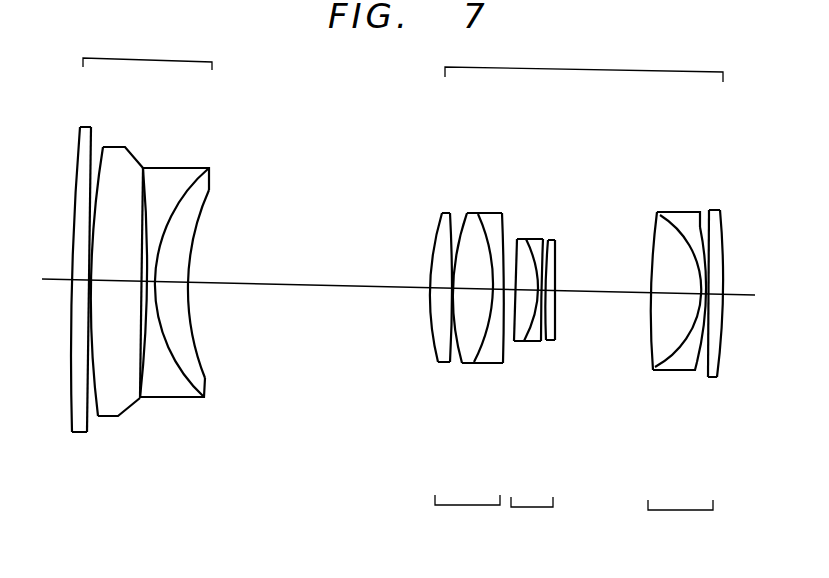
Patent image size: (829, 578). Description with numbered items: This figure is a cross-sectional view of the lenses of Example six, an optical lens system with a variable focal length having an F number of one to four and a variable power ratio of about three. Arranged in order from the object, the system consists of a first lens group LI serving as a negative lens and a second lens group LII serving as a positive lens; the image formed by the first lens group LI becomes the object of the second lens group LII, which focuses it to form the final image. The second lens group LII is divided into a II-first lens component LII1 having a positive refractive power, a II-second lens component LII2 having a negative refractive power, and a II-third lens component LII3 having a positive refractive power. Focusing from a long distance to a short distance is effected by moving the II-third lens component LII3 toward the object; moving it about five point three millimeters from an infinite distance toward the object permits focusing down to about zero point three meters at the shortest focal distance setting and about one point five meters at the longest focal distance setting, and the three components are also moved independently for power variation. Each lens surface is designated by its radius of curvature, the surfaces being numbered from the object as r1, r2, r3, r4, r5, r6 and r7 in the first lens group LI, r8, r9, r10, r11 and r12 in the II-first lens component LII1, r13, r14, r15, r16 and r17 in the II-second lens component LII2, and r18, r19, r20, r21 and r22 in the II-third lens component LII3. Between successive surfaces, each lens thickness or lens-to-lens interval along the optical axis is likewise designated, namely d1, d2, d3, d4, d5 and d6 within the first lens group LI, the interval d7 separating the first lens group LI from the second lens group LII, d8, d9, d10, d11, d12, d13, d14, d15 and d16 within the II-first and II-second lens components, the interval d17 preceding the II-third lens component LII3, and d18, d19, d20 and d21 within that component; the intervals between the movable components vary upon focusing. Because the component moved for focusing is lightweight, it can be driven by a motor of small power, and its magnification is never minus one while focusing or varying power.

The first lens surface r1 is at (78, 136).
The second lens surface r2 is at (93, 129).
The third lens surface r3 is at (104, 147).
The fourth lens surface r4 is at (143, 167).
The fifth lens surface r5 is at (145, 176).
The sixth lens surface r6 is at (199, 170).
The seventh lens surface r7 is at (210, 189).
The eighth lens surface r8 is at (437, 222).
The ninth lens surface r9 is at (453, 212).
The tenth lens surface r10 is at (462, 218).
The eleventh lens surface r11 is at (480, 214).
The twelfth lens surface r12 is at (505, 218).
The thirteenth lens surface r13 is at (517, 237).
The fourteenth lens surface r14 is at (527, 237).
The fifteenth lens surface r15 is at (544, 237).
The sixteenth lens surface r16 is at (549, 240).
The seventeenth lens surface r17 is at (556, 243).
The eighteenth lens surface r18 is at (657, 212).
The nineteenth lens surface r19 is at (662, 216).
The twentieth lens surface r20 is at (700, 214).
The twenty-first lens surface r21 is at (709, 210).
The twenty-second lens surface r22 is at (721, 215).
The first lens thickness or interval d1 is at (74, 305).
The second lens thickness or interval d2 is at (84, 300).
The third lens thickness or interval d3 is at (100, 300).
The fourth lens thickness or interval d4 is at (128, 298).
The fifth lens thickness or interval d5 is at (158, 300).
The sixth lens thickness or interval d6 is at (188, 300).
The seventh lens-to-lens interval d7 is at (317, 286).
The eighth lens thickness or interval d8 is at (433, 312).
The ninth lens thickness or interval d9 is at (453, 315).
The tenth lens thickness or interval d10 is at (470, 320).
The eleventh lens thickness or interval d11 is at (492, 320).
The twelfth lens thickness or interval d12 is at (506, 320).
The thirteenth lens thickness or interval d13 is at (528, 325).
The fourteenth lens thickness or interval d14 is at (540, 325).
The fifteenth lens thickness or interval d15 is at (546, 325).
The sixteenth lens thickness or interval d16 is at (552, 325).
The seventeenth lens-to-lens interval d17 is at (614, 297).
The eighteenth lens thickness or interval d18 is at (655, 318).
The nineteenth lens thickness or interval d19 is at (680, 320).
The twentieth lens thickness or interval d20 is at (703, 318).
The twenty-first lens thickness or interval d21 is at (713, 320).
The first lens group LI is at (147, 50).
The second lens group LII is at (584, 61).
The II-first lens component LII1 is at (467, 516).
The II-second lens component LII2 is at (532, 518).
The II-third lens component LII3 is at (680, 522).